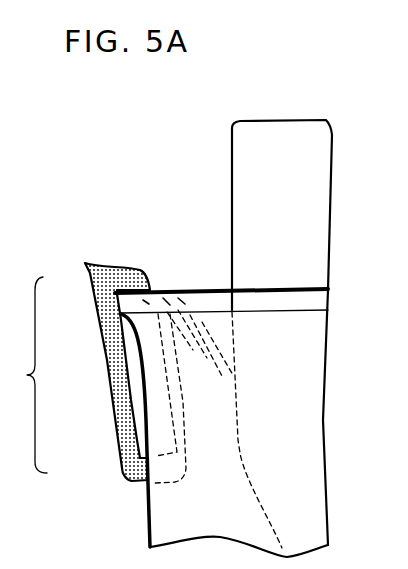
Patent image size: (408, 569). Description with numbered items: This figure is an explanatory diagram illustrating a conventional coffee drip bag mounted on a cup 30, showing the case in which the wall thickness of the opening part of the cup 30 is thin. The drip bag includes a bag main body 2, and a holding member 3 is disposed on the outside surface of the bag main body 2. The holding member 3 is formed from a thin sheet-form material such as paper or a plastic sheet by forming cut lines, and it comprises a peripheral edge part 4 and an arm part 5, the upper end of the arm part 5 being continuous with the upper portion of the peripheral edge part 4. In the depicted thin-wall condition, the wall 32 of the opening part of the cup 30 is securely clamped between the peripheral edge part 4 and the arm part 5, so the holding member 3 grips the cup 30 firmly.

The bag main body 2 is at (241, 155).
The holding member 3 is at (26, 375).
The peripheral edge part 4 is at (100, 313).
The arm part 5 is at (165, 283).
The cup 30 is at (163, 527).
The wall of the opening part of the cup 32 is at (208, 288).